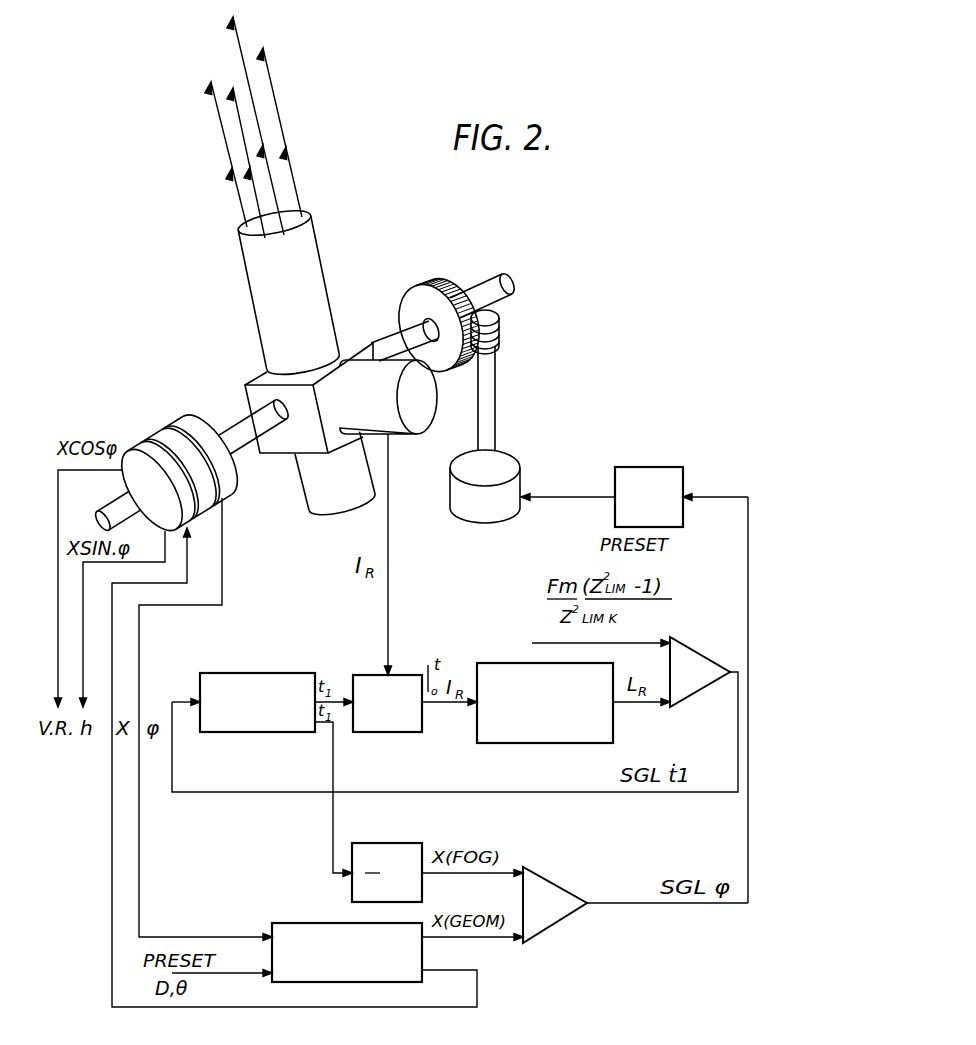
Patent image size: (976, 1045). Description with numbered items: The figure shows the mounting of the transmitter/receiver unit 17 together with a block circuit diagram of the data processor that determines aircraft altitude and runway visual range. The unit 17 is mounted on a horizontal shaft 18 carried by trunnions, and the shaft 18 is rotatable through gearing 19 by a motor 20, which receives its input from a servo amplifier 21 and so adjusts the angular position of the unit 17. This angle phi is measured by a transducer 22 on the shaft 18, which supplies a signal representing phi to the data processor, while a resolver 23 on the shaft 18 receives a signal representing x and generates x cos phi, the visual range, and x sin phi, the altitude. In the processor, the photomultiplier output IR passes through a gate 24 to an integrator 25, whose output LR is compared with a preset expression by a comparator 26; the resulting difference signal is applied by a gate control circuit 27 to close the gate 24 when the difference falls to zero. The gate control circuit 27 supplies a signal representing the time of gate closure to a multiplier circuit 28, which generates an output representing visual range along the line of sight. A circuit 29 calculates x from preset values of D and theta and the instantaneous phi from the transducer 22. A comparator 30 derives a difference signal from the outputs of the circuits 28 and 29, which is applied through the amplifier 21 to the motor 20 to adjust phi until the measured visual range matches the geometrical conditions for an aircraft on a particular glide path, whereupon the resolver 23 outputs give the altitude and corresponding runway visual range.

The transmitter/receiver unit 17 is at (347, 343).
The horizontal shaft 18 is at (403, 339).
The gearing 19 is at (457, 288).
The motor 20 is at (504, 452).
The servo amplifier 21 is at (628, 473).
The transducer 22 is at (192, 432).
The resolver 23 is at (150, 452).
The gate 24 is at (365, 675).
The integrator 25 is at (502, 664).
The comparator 26 is at (687, 655).
The gate control circuit 27 is at (272, 676).
The multiplier circuit 28 is at (390, 843).
The circuit 29 is at (325, 923).
The comparator 30 is at (544, 885).